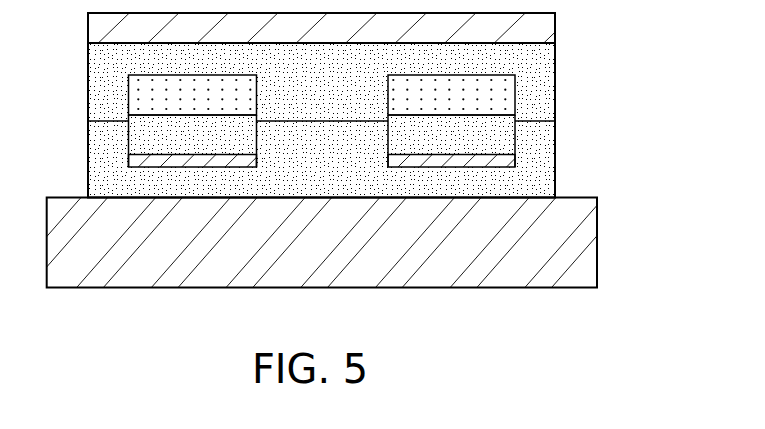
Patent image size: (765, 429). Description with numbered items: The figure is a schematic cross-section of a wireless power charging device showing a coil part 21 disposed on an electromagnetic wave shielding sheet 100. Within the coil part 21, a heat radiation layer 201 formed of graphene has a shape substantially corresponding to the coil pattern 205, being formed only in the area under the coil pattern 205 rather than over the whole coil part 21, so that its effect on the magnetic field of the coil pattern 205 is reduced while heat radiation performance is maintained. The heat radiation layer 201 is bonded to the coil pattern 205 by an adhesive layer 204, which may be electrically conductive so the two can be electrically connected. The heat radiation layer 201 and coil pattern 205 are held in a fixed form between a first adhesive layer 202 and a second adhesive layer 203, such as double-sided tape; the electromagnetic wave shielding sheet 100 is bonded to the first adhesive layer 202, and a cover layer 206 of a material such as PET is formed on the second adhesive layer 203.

The electromagnetic wave shielding sheet 100 is at (590, 247).
The coil part 21 is at (82, 13).
The heat radiation layer 201 is at (503, 163).
The first adhesive layer 202 is at (547, 178).
The second adhesive layer 203 is at (547, 60).
The adhesive layer 204 is at (508, 133).
The coil pattern 205 is at (503, 90).
The cover layer 206 is at (547, 25).